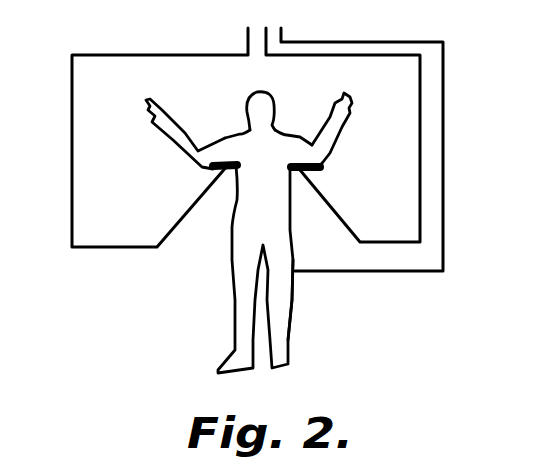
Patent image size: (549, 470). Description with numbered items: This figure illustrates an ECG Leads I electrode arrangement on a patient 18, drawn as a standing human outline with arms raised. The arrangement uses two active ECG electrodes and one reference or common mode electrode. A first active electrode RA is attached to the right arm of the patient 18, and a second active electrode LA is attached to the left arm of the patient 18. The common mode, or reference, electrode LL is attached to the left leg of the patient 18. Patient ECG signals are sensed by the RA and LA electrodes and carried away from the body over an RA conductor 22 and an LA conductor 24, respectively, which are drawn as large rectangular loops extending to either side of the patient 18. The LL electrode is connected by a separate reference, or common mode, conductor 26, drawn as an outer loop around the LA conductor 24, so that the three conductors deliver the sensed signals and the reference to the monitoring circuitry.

The patient 18 is at (252, 232).
The RA conductor 22 is at (72, 171).
The LA conductor 24 is at (420, 153).
The common mode conductor 26 is at (443, 168).
The first active electrode RA is at (213, 170).
The second active electrode LA is at (318, 168).
The common mode electrode LL is at (297, 263).